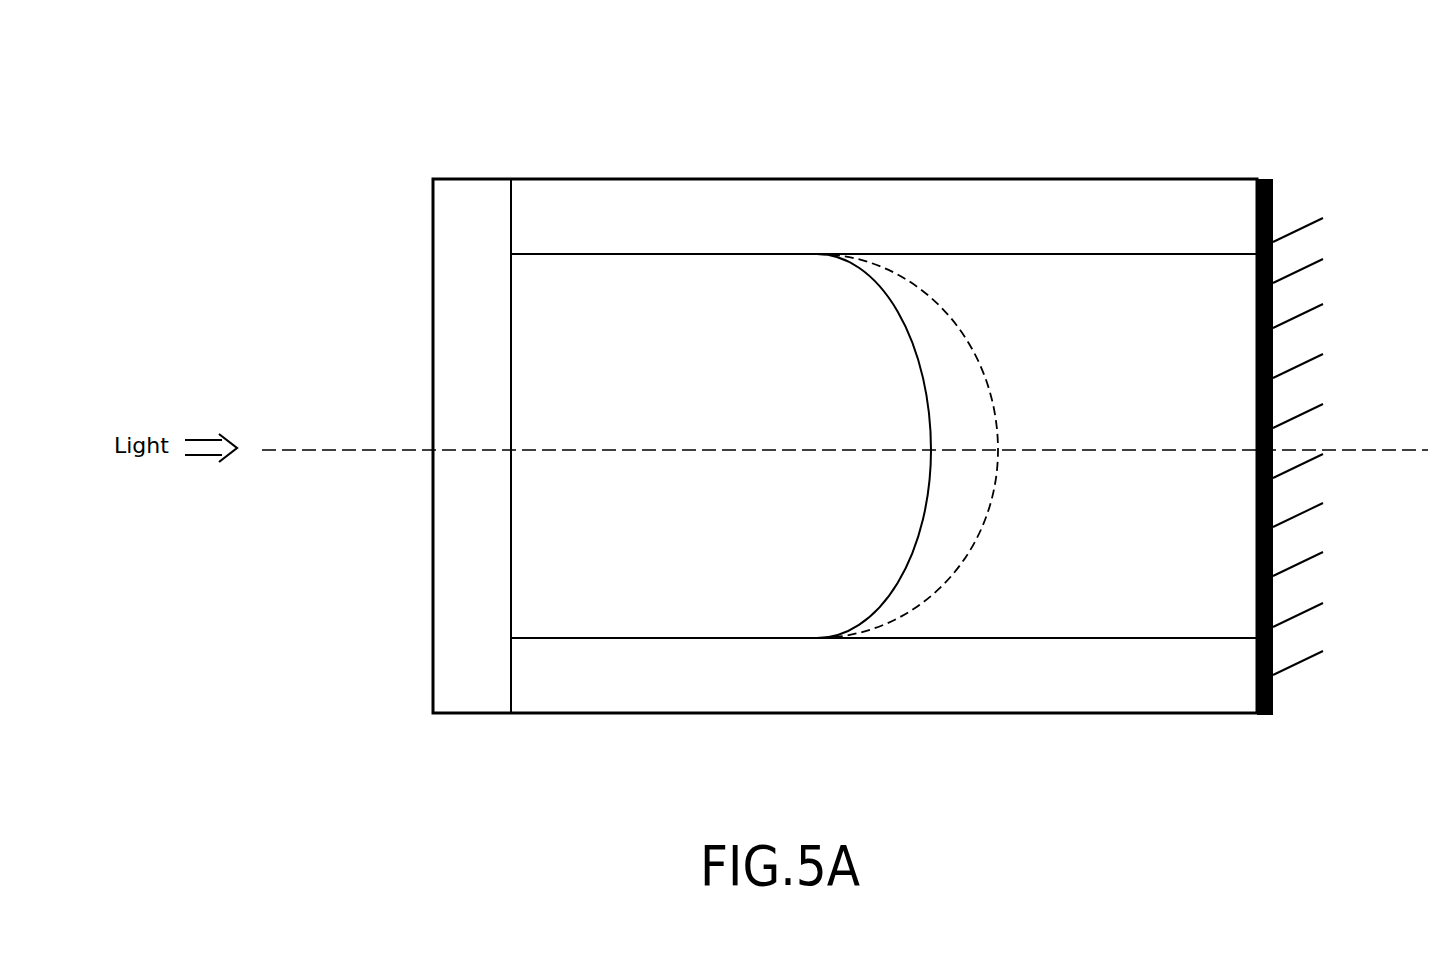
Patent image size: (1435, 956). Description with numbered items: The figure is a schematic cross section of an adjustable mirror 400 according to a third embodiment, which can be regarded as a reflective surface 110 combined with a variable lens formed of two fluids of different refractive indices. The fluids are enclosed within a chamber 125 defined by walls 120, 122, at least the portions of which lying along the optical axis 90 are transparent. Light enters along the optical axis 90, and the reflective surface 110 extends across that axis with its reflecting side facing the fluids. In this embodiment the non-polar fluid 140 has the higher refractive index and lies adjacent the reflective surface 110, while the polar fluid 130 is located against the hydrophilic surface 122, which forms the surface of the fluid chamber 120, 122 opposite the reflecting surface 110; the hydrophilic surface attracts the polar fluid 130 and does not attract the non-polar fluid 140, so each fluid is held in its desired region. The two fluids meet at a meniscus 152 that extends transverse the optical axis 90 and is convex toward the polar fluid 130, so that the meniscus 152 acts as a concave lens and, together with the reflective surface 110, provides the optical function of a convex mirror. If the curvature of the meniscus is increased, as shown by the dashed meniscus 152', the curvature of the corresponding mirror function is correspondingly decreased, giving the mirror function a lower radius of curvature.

The optical axis 90 is at (1368, 452).
The reflective surface 110 is at (1275, 218).
The wall of the chamber 120 is at (1180, 254).
The hydrophilic surface 122 is at (512, 325).
The chamber 125 is at (773, 290).
The polar fluid 130 is at (683, 290).
The non-polar fluid 140 is at (1062, 290).
The meniscus 152 is at (874, 377).
The meniscus of increased curvature 152' is at (907, 513).
The adjustable mirror 400 is at (1275, 686).